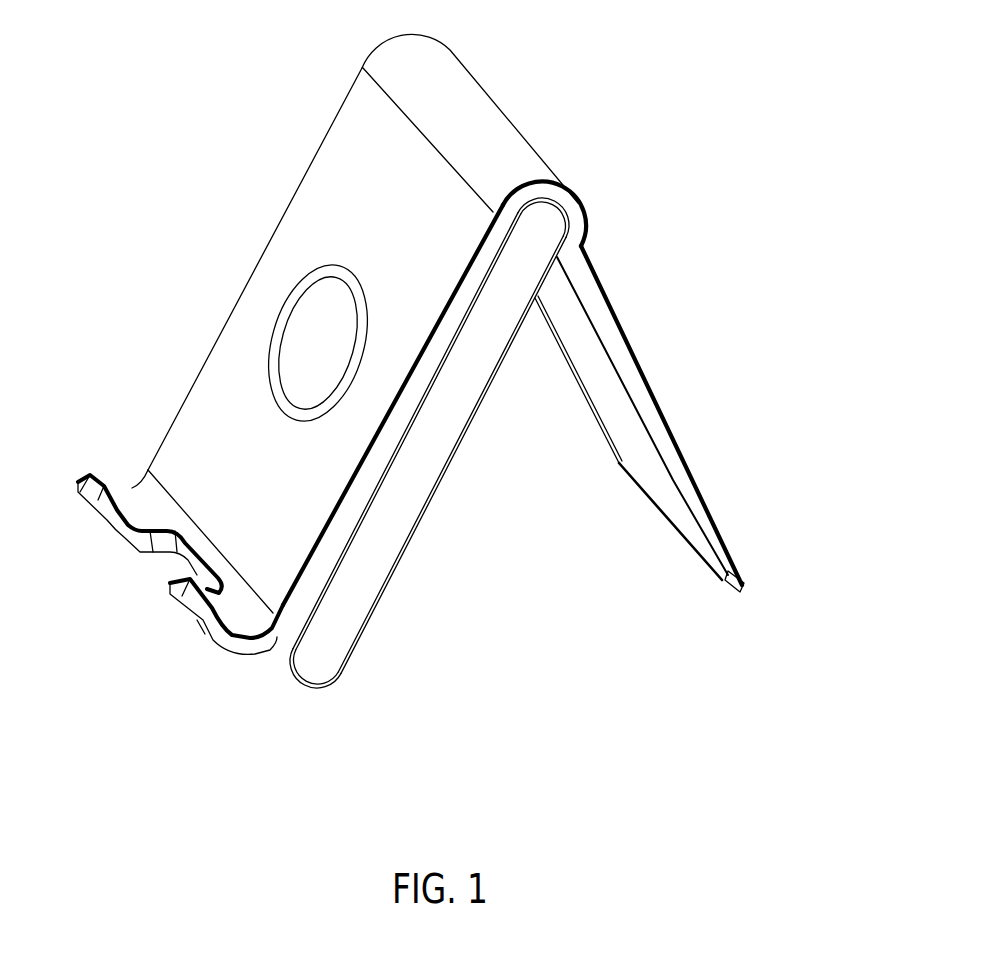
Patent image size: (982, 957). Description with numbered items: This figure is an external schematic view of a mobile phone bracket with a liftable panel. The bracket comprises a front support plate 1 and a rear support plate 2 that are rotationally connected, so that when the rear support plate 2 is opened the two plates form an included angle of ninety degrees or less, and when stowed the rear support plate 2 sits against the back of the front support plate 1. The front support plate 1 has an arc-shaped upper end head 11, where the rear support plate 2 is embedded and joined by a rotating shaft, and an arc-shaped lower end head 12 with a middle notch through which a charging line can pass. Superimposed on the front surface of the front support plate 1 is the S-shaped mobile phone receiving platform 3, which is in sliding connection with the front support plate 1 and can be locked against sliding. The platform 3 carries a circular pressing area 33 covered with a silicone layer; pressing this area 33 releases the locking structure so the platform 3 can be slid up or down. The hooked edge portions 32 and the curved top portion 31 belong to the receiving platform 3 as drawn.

The front support plate 1 is at (513, 458).
The upper end head of the front support plate 11 is at (567, 203).
The lower end head of the front support plate 12 is at (323, 678).
The rear support plate 2 is at (645, 358).
The mobile phone receiving platform 3 is at (351, 384).
The curved top portion 31 is at (488, 130).
The hook 32 is at (248, 660).
The circular pressing area 33 is at (300, 348).